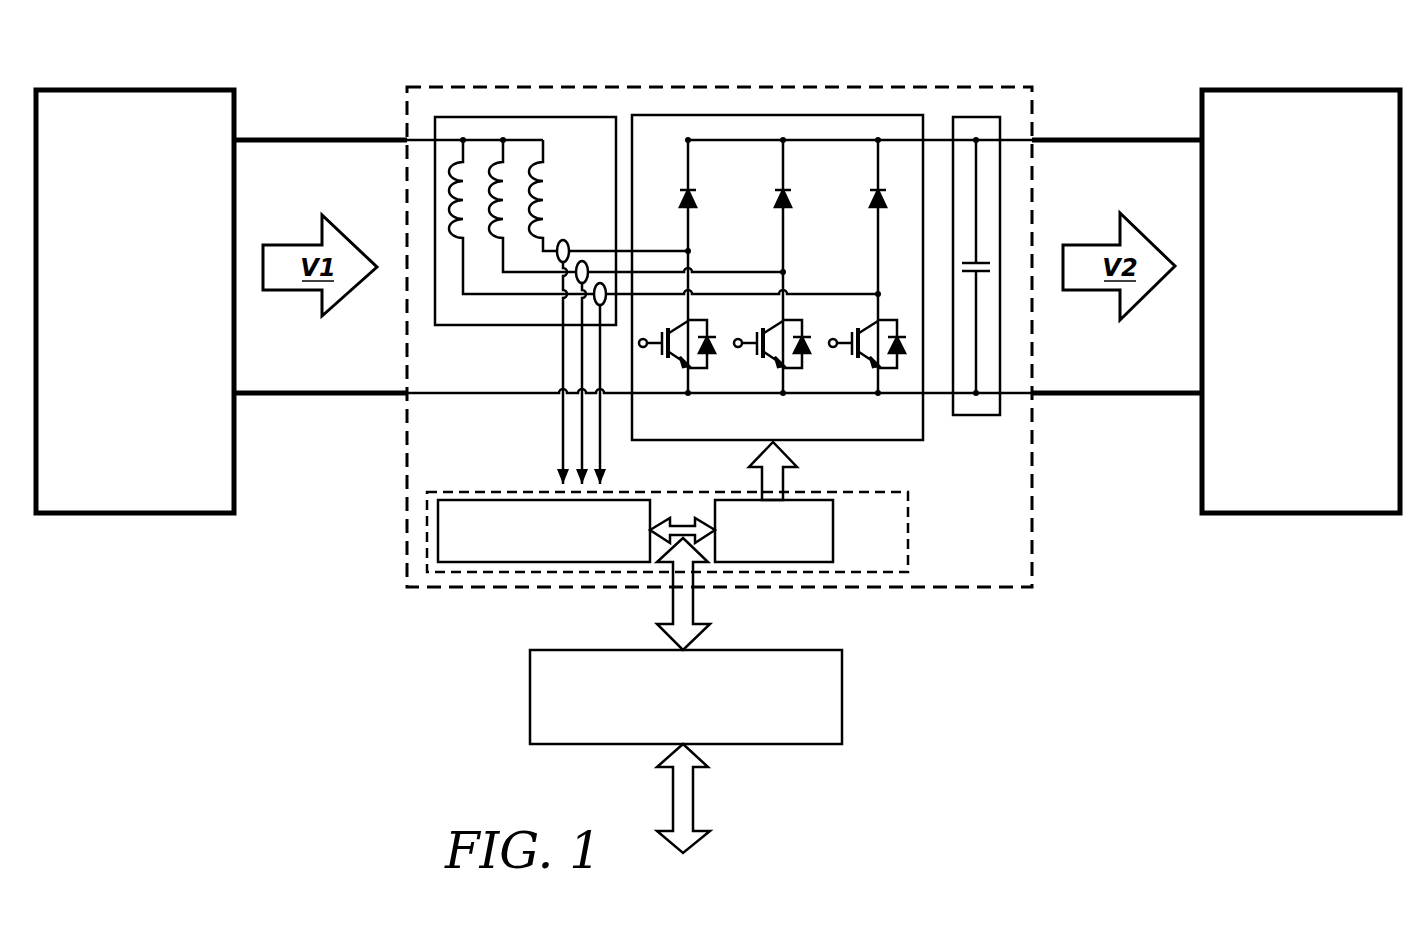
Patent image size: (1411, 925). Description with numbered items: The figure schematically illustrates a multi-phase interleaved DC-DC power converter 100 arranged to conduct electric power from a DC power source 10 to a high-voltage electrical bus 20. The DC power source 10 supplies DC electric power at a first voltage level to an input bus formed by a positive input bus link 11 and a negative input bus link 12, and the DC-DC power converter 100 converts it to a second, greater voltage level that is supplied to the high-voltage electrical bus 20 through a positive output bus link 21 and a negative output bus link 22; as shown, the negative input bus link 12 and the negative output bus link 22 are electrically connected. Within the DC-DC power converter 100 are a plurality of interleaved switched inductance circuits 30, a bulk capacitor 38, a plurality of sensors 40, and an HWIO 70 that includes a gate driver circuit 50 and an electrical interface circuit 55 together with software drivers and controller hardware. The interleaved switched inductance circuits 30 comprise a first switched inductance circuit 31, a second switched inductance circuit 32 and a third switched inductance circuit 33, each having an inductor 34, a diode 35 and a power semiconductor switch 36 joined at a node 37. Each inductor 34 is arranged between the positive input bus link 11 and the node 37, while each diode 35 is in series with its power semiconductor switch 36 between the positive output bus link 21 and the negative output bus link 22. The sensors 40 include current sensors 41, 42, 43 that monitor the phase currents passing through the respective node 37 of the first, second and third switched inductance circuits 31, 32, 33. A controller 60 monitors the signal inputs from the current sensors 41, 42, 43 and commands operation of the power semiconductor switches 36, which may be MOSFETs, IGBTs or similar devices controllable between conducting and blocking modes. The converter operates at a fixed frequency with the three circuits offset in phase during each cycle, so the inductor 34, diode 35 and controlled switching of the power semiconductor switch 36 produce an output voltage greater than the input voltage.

The DC power source 10 is at (120, 317).
The positive input bus link 11 is at (303, 129).
The negative input bus link 12 is at (303, 385).
The high-voltage electrical bus 20 is at (1285, 313).
The positive output bus link 21 is at (1103, 130).
The negative output bus link 22 is at (1103, 386).
The interleaved switched inductance circuits 30 is at (636, 112).
The first switched inductance circuit 31 is at (456, 245).
The second switched inductance circuit 32 is at (494, 254).
The third switched inductance circuit 33 is at (539, 247).
The inductor 34 is at (455, 166).
The diode 35 is at (693, 200).
The power semiconductor switch 36 is at (708, 366).
The node 37 is at (780, 272).
The bulk capacitor 38 is at (982, 262).
The sensors 40 is at (601, 206).
The current sensor 41 is at (563, 240).
The current sensor 42 is at (582, 261).
The current sensor 43 is at (600, 283).
The gate driver circuit 50 is at (756, 543).
The electrical interface circuit 55 is at (529, 543).
The controller 60 is at (667, 710).
The HWIO 70 is at (856, 543).
The multi-phase interleaved DC-DC power converter 100 is at (445, 86).